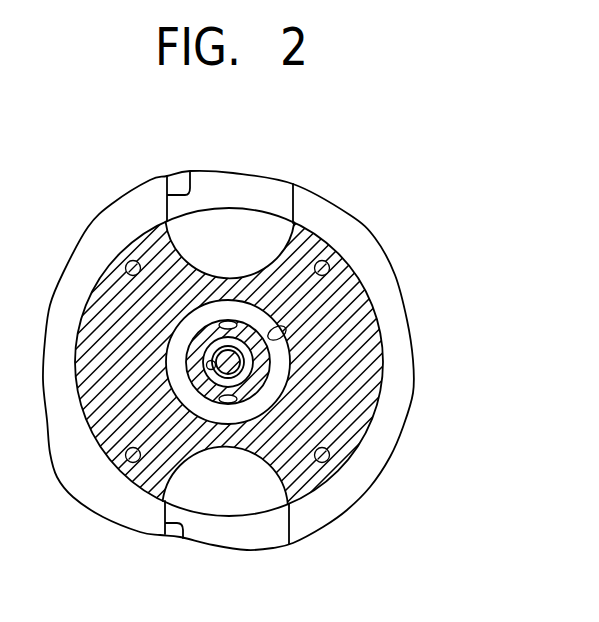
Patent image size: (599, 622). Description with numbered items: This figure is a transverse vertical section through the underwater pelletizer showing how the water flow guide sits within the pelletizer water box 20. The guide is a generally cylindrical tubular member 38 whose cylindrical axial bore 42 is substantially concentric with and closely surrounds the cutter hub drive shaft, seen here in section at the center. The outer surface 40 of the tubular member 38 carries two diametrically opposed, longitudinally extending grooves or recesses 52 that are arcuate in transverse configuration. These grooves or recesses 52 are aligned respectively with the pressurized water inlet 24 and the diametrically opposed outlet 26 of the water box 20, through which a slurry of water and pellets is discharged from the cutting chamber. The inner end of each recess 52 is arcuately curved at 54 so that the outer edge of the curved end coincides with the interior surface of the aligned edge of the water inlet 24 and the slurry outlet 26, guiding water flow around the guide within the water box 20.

The pelletizer water box 20 is at (380, 232).
The pressurized water inlet 24 is at (183, 538).
The outlet 26 is at (190, 171).
The cylindrical tubular member 38 is at (88, 437).
The outer surface 40 is at (383, 404).
The cylindrical axial bore 42 is at (286, 347).
The grooves or recesses 52 is at (278, 247).
The arcuately curved inner end 54 is at (222, 227).